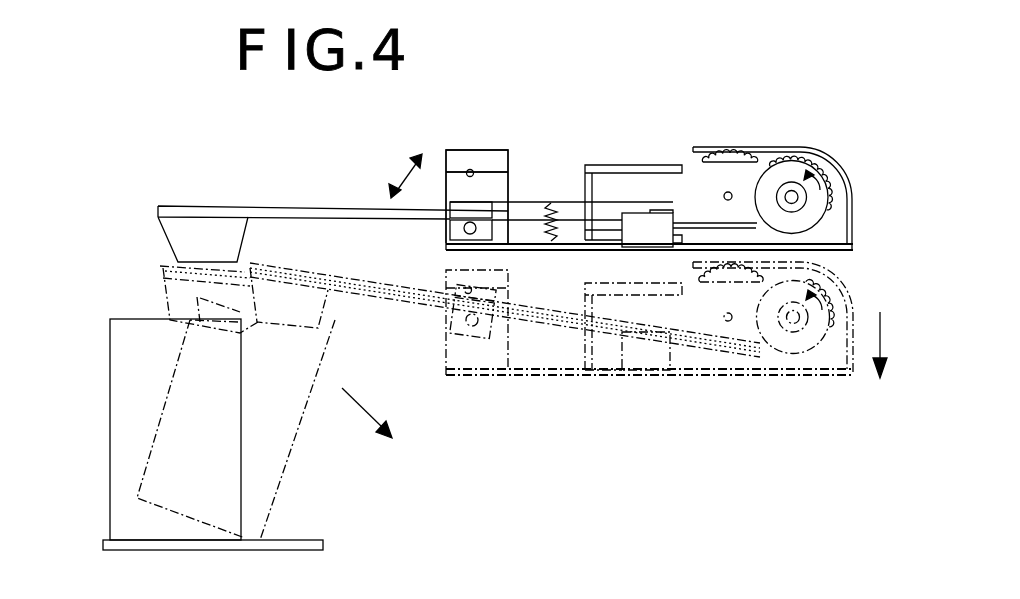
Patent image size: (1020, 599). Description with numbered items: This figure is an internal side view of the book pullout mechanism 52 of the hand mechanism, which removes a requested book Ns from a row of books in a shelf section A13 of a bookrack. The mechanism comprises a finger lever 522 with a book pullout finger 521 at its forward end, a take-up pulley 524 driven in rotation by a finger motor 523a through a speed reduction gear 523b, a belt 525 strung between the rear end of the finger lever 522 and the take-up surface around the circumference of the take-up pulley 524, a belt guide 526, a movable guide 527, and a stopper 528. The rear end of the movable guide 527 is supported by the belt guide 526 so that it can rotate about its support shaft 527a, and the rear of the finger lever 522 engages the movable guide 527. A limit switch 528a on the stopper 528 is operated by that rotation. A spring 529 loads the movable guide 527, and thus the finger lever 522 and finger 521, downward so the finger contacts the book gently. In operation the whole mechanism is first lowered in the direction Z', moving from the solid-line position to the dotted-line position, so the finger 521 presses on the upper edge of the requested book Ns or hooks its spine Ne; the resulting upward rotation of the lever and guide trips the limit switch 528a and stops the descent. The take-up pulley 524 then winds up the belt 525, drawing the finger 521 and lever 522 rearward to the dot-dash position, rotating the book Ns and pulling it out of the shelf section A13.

The book pullout mechanism 52 is at (329, 140).
The book pullout finger 521 is at (182, 237).
The finger lever 522 is at (297, 212).
The finger motor 523a is at (665, 165).
The speed reduction gear 523b is at (764, 155).
The take-up pulley 524 is at (813, 218).
The belt 525 is at (602, 165).
The belt guide 526 is at (634, 213).
The movable guide 527 is at (541, 203).
The support shaft 527a is at (699, 202).
The stopper 528 is at (464, 160).
The limit switch 528a is at (481, 168).
The spring 529 is at (546, 251).
The requested book Ns is at (128, 361).
The spine portion Ne is at (240, 396).
The shelf section A13 is at (327, 543).
The arrow Z' is at (884, 362).